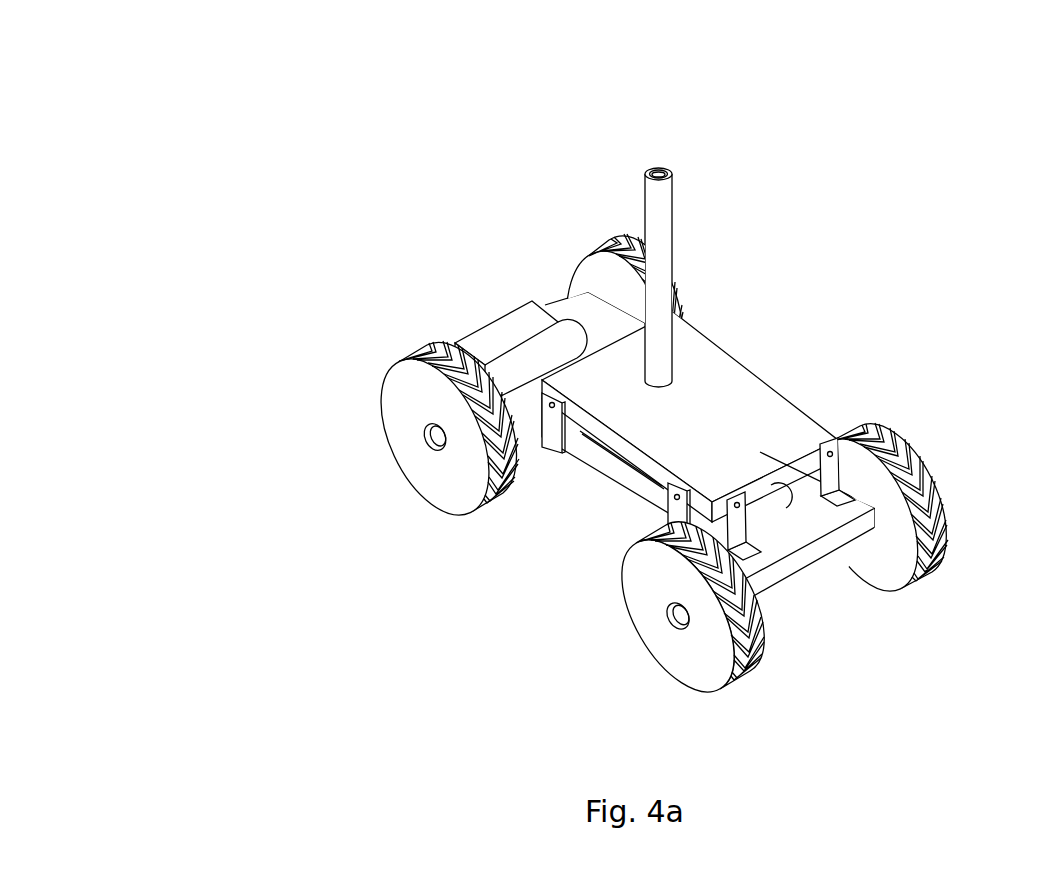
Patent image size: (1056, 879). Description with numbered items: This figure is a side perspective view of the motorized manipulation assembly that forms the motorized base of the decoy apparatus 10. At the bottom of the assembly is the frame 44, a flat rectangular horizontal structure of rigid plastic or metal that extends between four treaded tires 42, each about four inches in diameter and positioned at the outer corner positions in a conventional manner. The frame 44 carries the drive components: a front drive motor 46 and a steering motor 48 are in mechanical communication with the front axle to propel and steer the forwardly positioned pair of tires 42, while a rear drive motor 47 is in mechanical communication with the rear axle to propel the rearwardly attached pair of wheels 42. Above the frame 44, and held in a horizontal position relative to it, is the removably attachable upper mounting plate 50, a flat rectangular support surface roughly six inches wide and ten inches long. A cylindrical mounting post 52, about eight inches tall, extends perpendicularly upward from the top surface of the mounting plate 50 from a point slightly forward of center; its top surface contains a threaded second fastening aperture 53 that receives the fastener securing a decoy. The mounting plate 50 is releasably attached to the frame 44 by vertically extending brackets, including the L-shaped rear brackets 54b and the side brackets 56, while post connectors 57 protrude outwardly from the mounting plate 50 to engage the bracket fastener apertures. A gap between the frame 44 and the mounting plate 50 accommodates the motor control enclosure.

The apparatus 10 is at (164, 136).
The treaded tires 42 is at (602, 248).
The frame 44 is at (605, 485).
The front drive motor 46 is at (522, 355).
The rear drive motor 47 is at (769, 497).
The steering motor 48 is at (477, 333).
The mounting plate 50 is at (730, 355).
The mounting post 52 is at (705, 255).
The second fastening aperture 53 is at (667, 167).
The rear brackets 54b is at (838, 502).
The side brackets 56 is at (558, 447).
The post connectors 57 is at (737, 505).